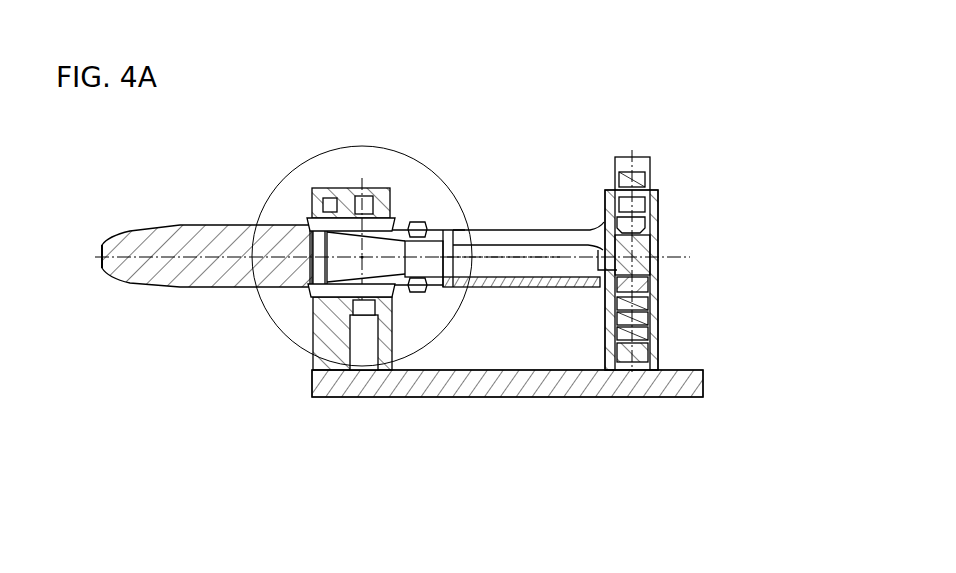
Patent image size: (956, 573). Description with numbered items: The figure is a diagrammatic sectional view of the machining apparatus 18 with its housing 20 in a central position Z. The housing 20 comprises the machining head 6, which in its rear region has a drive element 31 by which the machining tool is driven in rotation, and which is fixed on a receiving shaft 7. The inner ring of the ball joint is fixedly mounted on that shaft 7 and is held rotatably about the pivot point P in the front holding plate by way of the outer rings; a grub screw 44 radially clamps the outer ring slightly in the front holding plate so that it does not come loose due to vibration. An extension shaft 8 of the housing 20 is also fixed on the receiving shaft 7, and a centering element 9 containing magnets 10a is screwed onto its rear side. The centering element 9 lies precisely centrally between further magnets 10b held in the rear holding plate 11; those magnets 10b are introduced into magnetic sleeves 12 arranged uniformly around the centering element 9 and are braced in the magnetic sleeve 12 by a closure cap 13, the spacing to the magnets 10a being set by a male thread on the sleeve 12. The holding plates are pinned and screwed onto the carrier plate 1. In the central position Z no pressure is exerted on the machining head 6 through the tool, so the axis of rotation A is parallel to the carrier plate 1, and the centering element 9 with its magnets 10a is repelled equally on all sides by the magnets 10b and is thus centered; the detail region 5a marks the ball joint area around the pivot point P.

The carrier plate 1 is at (534, 385).
The detail region of clamping device 5a is at (318, 148).
The machining head 6 is at (200, 268).
The receiving shaft 7 is at (383, 290).
The extension shaft 8 is at (500, 283).
The centering element 9 is at (637, 268).
The magnets 10a is at (650, 287).
The magnets 10b is at (657, 310).
The rear holding plate 11 is at (650, 203).
The magnetic sleeve 12 is at (607, 350).
The closure cap 13 is at (657, 350).
The machining apparatus 18 is at (578, 125).
The housing 20 is at (500, 478).
The drive element 31 is at (270, 268).
The grub screw 44 is at (325, 208).
The axis of rotation A is at (493, 257).
The pivot point P is at (362, 250).
The central position Z is at (380, 446).